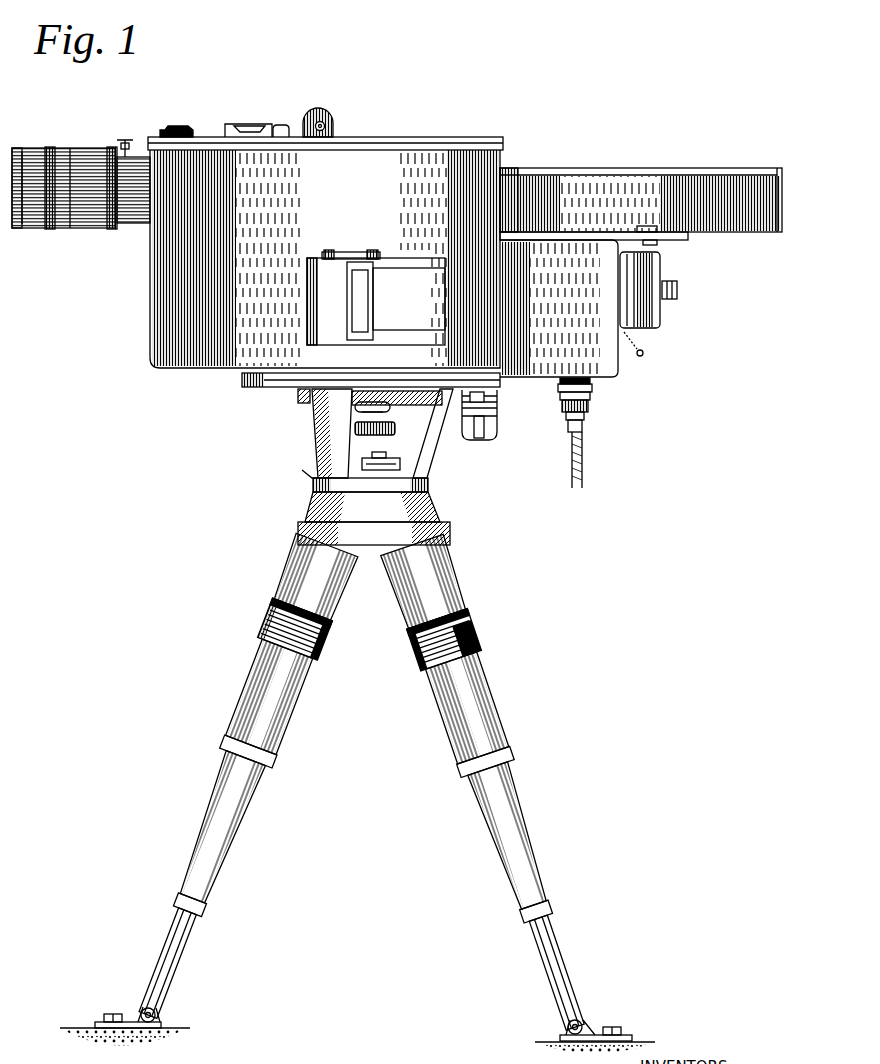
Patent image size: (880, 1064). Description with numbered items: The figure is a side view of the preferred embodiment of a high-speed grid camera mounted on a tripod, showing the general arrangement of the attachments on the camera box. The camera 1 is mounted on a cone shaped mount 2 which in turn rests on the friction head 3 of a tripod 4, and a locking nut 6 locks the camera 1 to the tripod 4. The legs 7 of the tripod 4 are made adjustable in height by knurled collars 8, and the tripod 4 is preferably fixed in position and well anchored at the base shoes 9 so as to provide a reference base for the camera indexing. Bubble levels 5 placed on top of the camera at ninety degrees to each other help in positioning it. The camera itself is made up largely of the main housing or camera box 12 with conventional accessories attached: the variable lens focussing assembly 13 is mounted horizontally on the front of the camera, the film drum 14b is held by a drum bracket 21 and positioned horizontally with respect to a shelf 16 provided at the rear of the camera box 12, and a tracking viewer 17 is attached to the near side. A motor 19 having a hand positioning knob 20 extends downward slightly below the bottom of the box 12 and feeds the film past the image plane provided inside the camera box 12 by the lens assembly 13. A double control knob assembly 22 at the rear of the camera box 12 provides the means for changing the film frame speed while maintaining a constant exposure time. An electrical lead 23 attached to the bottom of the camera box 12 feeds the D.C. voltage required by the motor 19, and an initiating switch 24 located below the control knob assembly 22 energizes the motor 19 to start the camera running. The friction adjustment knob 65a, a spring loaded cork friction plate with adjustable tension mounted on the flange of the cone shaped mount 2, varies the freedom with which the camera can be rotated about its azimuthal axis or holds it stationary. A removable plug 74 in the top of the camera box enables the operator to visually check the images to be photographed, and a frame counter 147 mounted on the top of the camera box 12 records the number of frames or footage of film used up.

The camera 1 is at (325, 284).
The cone shaped mount 2 is at (342, 449).
The friction head 3 is at (420, 482).
The tripod 4 is at (446, 510).
The bubble levels 5 is at (266, 131).
The locking nut 6 is at (378, 458).
The legs 7 is at (213, 851).
The knurled collars 8 is at (312, 635).
The base shoes 9 is at (157, 1021).
The camera box 12 is at (335, 230).
The variable lens focussing assembly 13 is at (33, 228).
The film drum 14b is at (727, 217).
The shelf 16 is at (572, 246).
The tracking viewer 17 is at (412, 310).
The motor 19 is at (387, 408).
The hand positioning knob 20 is at (393, 432).
The drum bracket 21 is at (516, 186).
The double control knob assembly 22 is at (673, 318).
The electrical lead 23 is at (585, 464).
The initiating switch 24 is at (641, 356).
The friction adjustment knob 65a is at (500, 432).
The removable plug 74 is at (204, 118).
The frame counter 147 is at (333, 120).